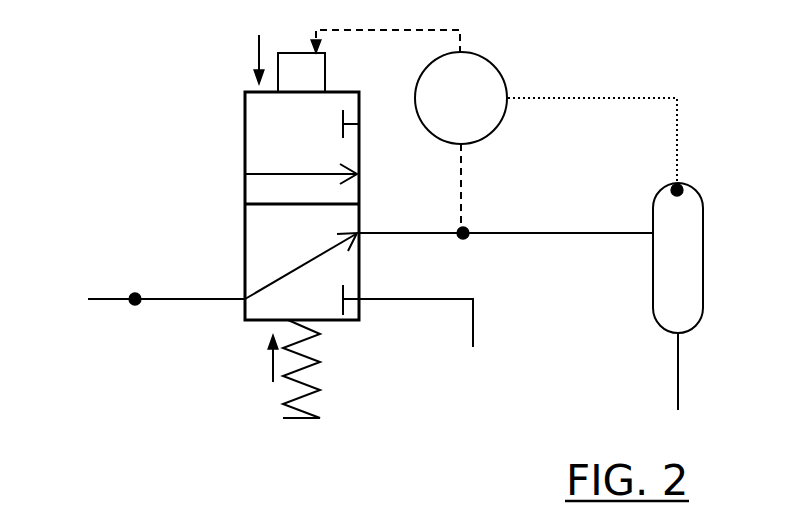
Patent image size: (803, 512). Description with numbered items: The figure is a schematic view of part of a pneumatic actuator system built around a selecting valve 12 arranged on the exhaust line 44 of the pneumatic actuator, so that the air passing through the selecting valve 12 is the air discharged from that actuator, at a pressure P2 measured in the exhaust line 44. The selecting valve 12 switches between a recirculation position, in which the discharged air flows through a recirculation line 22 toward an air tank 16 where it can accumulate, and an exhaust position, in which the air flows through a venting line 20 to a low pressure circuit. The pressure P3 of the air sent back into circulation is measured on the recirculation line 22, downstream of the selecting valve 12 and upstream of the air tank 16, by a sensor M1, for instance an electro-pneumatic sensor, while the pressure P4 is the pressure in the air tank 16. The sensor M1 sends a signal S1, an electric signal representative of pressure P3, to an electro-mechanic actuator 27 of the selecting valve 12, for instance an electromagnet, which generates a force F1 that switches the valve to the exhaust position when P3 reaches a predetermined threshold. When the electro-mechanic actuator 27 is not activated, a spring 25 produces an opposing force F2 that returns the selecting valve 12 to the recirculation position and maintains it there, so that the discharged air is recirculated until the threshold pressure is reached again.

The selecting valve 12 is at (193, 193).
The electro-mechanic actuator 27 is at (311, 67).
The spring 25 is at (317, 369).
The exhaust line 44 is at (145, 305).
The venting line 20 is at (425, 341).
The recirculation line 22 is at (675, 386).
The air tank 16 is at (678, 258).
The pressure of air in the exhaust line P2 is at (140, 287).
The pressure of the air sent back into circulation P3 is at (478, 222).
The pressure in the air tank P4 is at (690, 179).
The sensor M1 is at (546, 140).
The signal S1 is at (385, 30).
The force F1 is at (242, 59).
The force generated by the spring F2 is at (255, 360).